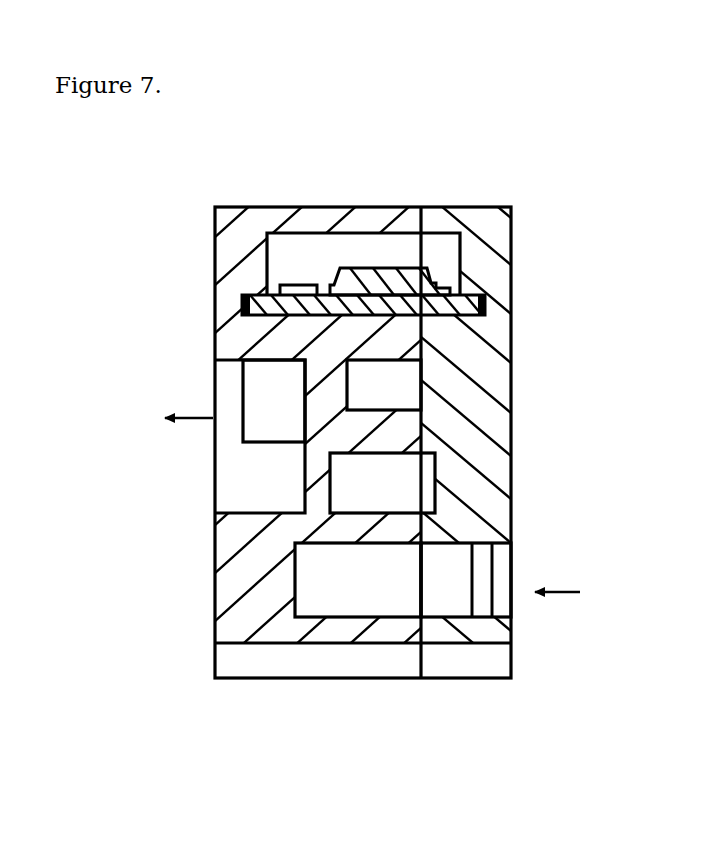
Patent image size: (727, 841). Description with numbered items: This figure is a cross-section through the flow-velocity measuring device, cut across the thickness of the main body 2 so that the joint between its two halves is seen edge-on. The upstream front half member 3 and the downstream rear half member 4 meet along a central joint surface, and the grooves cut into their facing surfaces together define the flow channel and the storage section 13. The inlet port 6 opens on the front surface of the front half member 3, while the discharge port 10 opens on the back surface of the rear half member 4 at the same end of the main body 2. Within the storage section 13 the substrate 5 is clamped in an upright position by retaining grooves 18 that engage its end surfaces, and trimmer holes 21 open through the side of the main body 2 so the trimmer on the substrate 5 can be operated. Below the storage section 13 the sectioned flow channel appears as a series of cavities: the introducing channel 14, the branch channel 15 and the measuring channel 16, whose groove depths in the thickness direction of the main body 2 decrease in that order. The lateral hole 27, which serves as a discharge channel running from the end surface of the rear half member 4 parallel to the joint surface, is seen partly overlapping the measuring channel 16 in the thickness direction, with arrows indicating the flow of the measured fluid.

The main body 2 is at (205, 231).
The front half member 3 is at (514, 258).
The rear half member 4 is at (214, 600).
The substrate 5 is at (327, 291).
The inlet port 6 is at (513, 620).
The discharge port 10 is at (214, 456).
The storage section 13 is at (317, 278).
The introducing channel 14 is at (397, 600).
The branch channel 15 is at (397, 502).
The measuring channel 16 is at (397, 402).
The retaining grooves 18 is at (490, 312).
The trimmer holes 21 is at (337, 221).
The lateral hole 27 is at (290, 415).